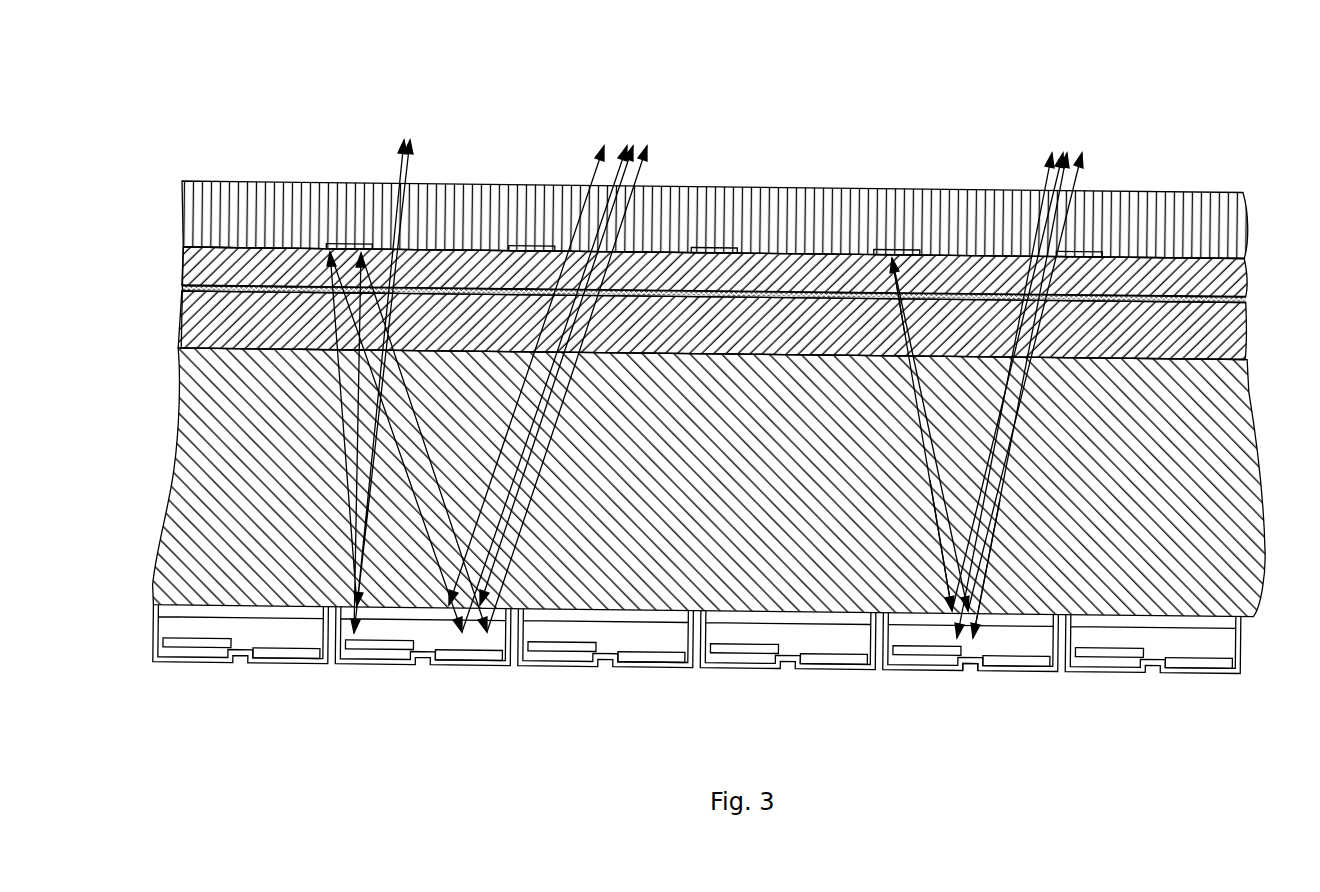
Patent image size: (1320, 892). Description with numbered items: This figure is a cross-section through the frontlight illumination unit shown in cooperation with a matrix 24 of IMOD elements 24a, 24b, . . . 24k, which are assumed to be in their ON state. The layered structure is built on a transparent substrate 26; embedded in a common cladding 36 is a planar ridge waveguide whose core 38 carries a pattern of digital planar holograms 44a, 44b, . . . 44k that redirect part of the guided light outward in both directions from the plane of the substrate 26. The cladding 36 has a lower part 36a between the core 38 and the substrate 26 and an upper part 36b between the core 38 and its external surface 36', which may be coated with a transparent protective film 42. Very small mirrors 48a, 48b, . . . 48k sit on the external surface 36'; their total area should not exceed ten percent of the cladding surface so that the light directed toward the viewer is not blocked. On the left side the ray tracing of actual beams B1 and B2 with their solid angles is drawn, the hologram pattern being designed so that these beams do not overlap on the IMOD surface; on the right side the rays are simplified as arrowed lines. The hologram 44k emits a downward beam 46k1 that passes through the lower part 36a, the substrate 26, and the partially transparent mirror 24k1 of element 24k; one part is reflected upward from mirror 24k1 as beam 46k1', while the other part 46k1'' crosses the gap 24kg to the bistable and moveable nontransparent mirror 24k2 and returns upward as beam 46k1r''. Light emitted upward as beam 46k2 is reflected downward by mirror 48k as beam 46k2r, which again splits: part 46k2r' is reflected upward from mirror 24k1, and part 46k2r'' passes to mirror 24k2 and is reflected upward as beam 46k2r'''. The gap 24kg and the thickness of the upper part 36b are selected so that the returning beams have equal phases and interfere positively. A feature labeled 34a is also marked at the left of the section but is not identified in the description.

The matrix of IMOD elements 24 is at (262, 670).
The IMOD element 24a is at (397, 663).
The IMOD element 24b is at (572, 665).
The IMOD element 24k is at (942, 668).
The partially transparent mirror 24k1 is at (915, 650).
The bistable and moveable nontransparent mirror 24k2 is at (928, 637).
The gap 24kg is at (940, 650).
The transparent substrate 26 is at (1192, 390).
The interface 34a is at (165, 283).
The cladding layer 36 is at (709, 244).
The external surface of the cladding 36' is at (441, 161).
The lower part of the cladding 36a is at (224, 307).
The upper part of the cladding 36b is at (304, 258).
The core 38 is at (762, 288).
The transparent protective film 42 is at (1220, 207).
The digital planar hologram 44a is at (293, 267).
The digital planar hologram 44b is at (511, 275).
The digital planar hologram 44k is at (857, 268).
The downwardly directed beam 46k1 is at (845, 487).
The first part of beam 46k1 46k1' is at (1006, 374).
The other part of beam 46k1 46k1'' is at (844, 623).
The reflected beam 46k1r'' is at (1017, 358).
The upwardly directed beam 46k2 is at (878, 262).
The downwardly reflected beam 46k2r is at (931, 205).
The part of beam 46k2r 46k2r' is at (1069, 344).
The part of beam 46k2r 46k2r'' is at (1083, 634).
The reflected beam 46k2r''' is at (1085, 435).
The mirror 48a is at (373, 247).
The mirror 48b is at (514, 246).
The mirror 48k is at (893, 247).
The beam B1 is at (372, 278).
The beam B2 is at (355, 380).